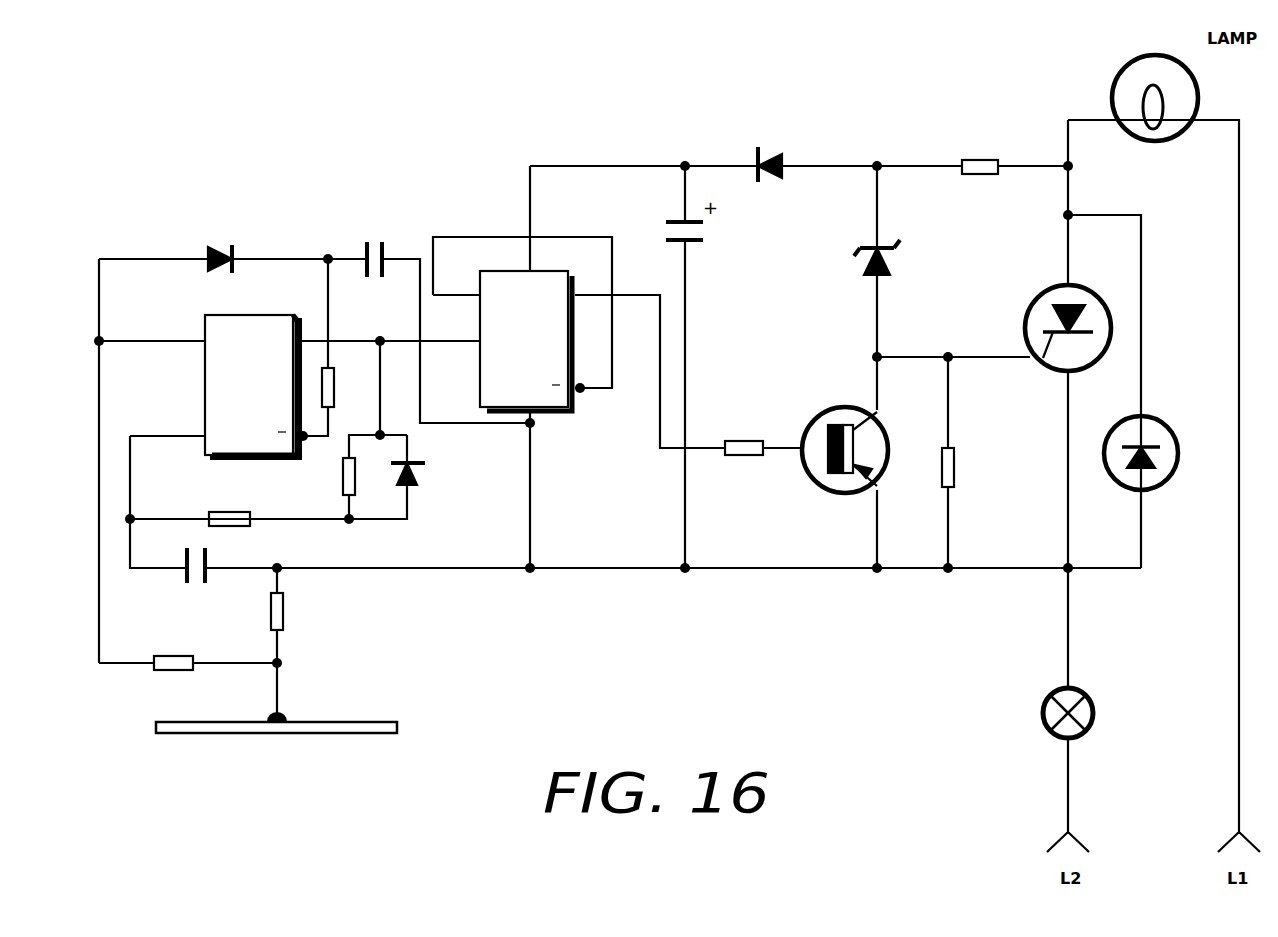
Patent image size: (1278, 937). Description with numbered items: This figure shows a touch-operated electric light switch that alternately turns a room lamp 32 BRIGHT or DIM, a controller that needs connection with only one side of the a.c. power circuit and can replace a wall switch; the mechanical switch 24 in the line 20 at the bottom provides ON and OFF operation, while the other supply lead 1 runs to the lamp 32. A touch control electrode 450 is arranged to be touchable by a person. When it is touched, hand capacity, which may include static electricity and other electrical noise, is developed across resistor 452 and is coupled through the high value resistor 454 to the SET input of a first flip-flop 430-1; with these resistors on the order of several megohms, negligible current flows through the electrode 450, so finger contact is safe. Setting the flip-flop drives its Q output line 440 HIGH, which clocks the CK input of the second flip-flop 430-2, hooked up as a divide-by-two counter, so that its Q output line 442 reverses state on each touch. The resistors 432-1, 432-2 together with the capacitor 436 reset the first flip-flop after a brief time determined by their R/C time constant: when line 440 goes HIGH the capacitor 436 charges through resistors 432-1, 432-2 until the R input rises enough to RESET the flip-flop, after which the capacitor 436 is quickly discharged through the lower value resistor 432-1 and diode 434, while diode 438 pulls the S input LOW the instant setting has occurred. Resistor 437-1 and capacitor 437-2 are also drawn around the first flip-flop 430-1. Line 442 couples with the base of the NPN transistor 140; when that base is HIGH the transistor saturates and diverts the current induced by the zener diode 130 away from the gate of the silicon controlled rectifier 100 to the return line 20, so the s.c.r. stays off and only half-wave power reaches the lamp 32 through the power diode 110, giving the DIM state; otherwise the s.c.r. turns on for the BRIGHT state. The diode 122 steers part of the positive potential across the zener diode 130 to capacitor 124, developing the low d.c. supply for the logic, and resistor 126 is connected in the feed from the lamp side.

The diode 438 is at (202, 250).
The capacitor 437-2 is at (374, 239).
The resistor 437-1 is at (321, 360).
The Q output line 440 is at (354, 338).
The flip-flop 430-1 is at (233, 328).
The second flip-flop 430-2 is at (535, 385).
The Q output line 442 is at (631, 291).
The capacitor 124 is at (712, 246).
The diode 122 is at (748, 158).
The dropping resistor 126 is at (972, 156).
The zener diode 130 is at (905, 260).
The silicon controlled rectifier 100 is at (1026, 310).
The lamp 32 is at (1108, 88).
The power diode 110 is at (1170, 418).
The NPN transistor 140 is at (804, 423).
The diode 434 is at (432, 468).
The resistor 432-1 is at (247, 508).
The resistor 432-2 is at (360, 472).
The capacitor 436 is at (211, 586).
The resistor 452 is at (288, 612).
The high value resistor 454 is at (162, 653).
The touch control electrode 450 is at (334, 716).
The mechanical switch 24 is at (1092, 698).
The side of the a.c. power line 20 is at (1058, 789).
The power line 1 is at (1246, 781).